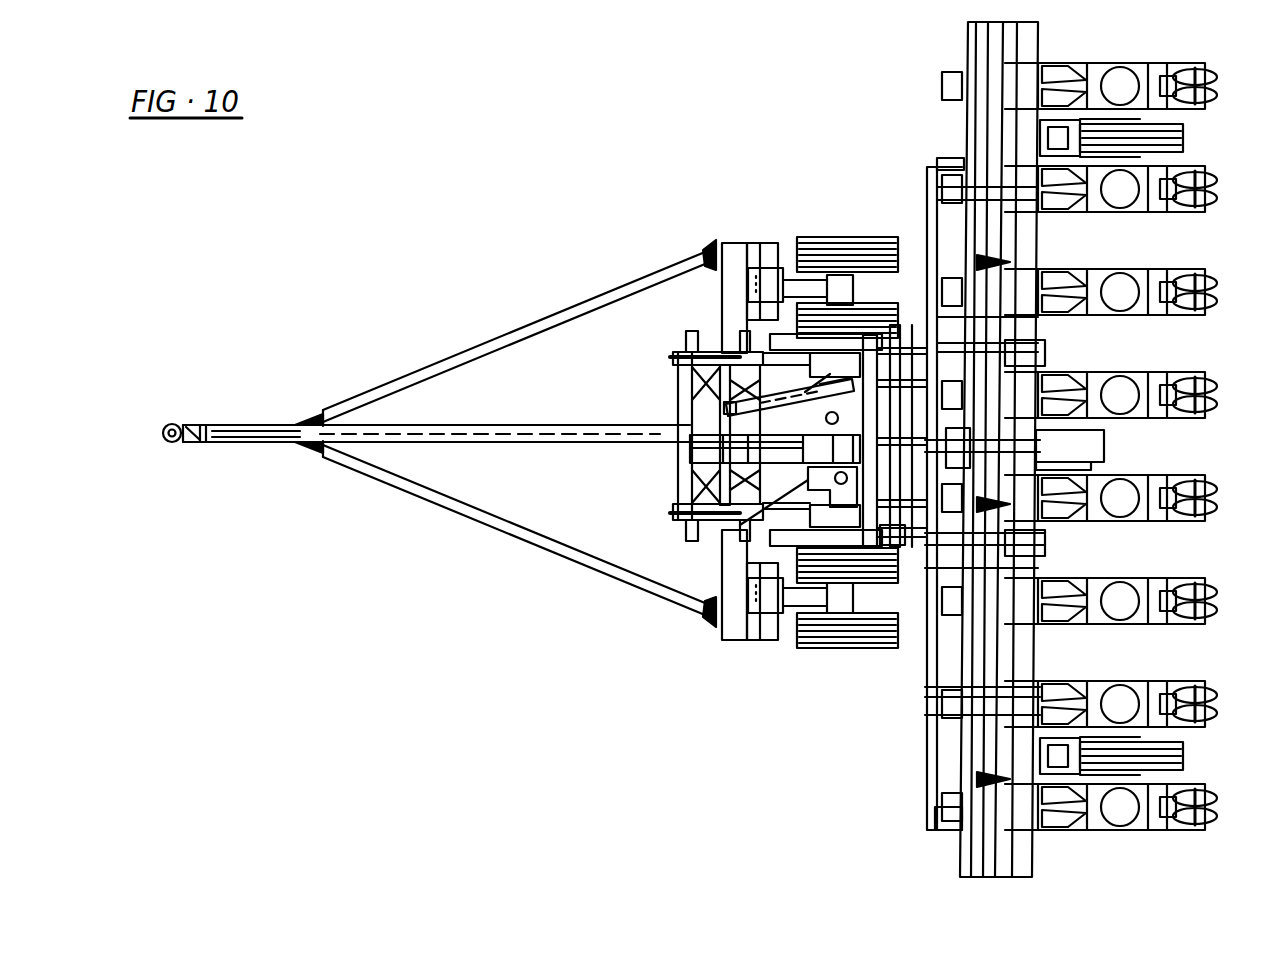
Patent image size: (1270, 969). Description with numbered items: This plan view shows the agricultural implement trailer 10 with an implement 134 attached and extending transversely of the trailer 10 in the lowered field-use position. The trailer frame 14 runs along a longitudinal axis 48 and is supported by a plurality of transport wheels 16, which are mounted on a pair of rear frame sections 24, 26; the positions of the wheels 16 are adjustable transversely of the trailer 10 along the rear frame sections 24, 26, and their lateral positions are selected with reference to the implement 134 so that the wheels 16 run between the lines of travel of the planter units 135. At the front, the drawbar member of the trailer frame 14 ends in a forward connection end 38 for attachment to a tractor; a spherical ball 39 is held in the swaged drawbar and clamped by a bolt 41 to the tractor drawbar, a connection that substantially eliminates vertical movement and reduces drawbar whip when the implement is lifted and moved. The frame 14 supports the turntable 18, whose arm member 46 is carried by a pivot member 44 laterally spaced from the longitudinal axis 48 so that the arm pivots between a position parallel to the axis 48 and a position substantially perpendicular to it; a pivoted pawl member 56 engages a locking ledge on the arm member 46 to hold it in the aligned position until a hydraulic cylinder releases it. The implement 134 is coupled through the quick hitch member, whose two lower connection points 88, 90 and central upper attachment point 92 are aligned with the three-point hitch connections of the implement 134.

The agricultural implement trailer 10 is at (500, 567).
The trailer frame 14 is at (309, 420).
The transport wheels 16 is at (846, 300).
The turntable 18 is at (668, 402).
The rear frame section 24 is at (765, 258).
The rear frame section 26 is at (764, 640).
The forward connection end 38 is at (200, 426).
The spherical ball 39 is at (176, 444).
The bolt 41 is at (178, 426).
The pivot member 44 is at (792, 376).
The arm member 46 is at (700, 456).
The longitudinal axis 48 is at (542, 428).
The pawl member 56 is at (817, 480).
The lower connection point 88 is at (897, 552).
The lower connection point 90 is at (906, 340).
The upper attachment point 92 is at (930, 432).
The implement 134 is at (916, 698).
The planter units 135 is at (1138, 74).